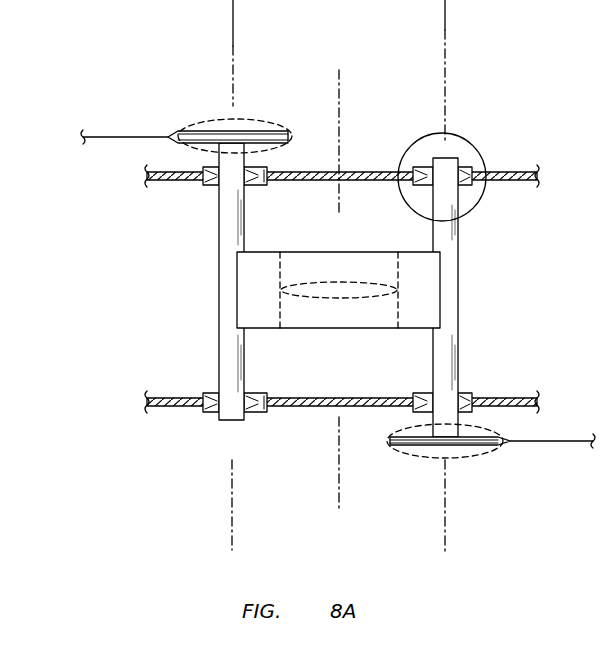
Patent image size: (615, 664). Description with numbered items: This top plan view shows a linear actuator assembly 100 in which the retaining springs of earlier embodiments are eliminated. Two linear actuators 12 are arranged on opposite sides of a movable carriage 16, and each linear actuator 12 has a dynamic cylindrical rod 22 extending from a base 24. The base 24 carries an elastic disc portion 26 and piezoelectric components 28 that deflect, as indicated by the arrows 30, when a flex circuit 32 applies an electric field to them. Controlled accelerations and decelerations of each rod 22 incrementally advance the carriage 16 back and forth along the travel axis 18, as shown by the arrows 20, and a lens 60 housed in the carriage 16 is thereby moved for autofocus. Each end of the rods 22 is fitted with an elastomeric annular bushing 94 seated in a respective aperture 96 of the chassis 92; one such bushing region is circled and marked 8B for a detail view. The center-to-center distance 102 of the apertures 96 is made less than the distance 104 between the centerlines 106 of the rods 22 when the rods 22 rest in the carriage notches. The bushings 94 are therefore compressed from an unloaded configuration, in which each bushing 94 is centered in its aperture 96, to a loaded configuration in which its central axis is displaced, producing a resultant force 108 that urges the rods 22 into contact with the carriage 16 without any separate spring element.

The linear actuator assembly 100 is at (160, 36).
The base 24 is at (214, 100).
The elastic disc portion 26 is at (278, 137).
The piezoelectric components 28 is at (257, 142).
The deflection arrows 30 is at (299, 152).
The flex circuit 32 is at (128, 134).
The linear actuator 12 is at (187, 155).
The elastomeric annular bushings 94 is at (205, 183).
The apertures 96 is at (213, 197).
The chassis 92 is at (385, 171).
The detail view 8B is at (460, 134).
The dynamic cylindrical rod 22 is at (447, 228).
The carriage movement arrows 20 is at (339, 218).
The resultant force 108 is at (218, 289).
The carriage 16 is at (256, 326).
The lens 60 is at (322, 297).
The travel axis 18 is at (338, 463).
The centerlines 106 is at (232, 497).
The distance between centerlines 104 is at (445, 7).
The center-to-center distance 102 is at (445, 37).